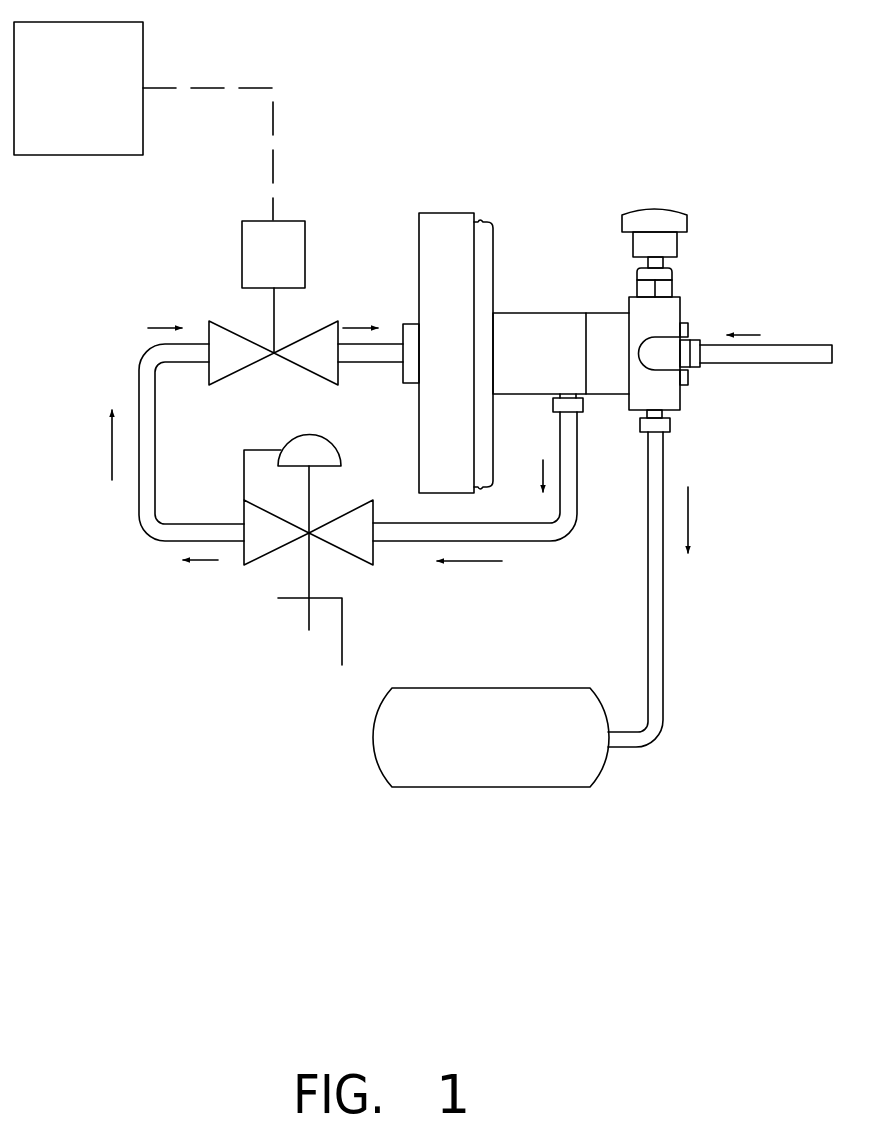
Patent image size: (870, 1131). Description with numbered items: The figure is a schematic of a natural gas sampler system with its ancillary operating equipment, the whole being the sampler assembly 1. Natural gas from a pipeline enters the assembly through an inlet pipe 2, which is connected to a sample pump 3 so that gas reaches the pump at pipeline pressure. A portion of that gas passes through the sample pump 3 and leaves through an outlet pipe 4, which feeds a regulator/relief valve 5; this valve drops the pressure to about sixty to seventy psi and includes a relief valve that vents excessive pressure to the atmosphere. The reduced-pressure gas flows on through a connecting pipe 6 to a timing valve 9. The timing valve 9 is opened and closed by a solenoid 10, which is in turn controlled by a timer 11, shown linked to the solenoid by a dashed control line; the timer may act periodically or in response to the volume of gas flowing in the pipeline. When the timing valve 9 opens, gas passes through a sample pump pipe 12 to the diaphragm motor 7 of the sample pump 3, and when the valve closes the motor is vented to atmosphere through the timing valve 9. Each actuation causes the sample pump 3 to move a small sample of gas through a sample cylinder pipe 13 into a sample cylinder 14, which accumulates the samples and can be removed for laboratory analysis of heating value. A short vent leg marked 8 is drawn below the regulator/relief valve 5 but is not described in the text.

The sampler assembly 1 is at (463, 118).
The inlet pipe 2 is at (780, 352).
The sample pump 3 is at (536, 285).
The outlet pipe 4 is at (567, 485).
The regulator/relief valve 5 is at (260, 543).
The connecting pipe 6 is at (152, 523).
The diaphragm motor 7 is at (447, 231).
The vent line 8 is at (342, 630).
The timing valve 9 is at (320, 338).
The solenoid 10 is at (252, 254).
The timer 11 is at (128, 48).
The sample pump pipe 12 is at (392, 344).
The sample cylinder pipe 13 is at (655, 622).
The sample cylinder 14 is at (551, 777).